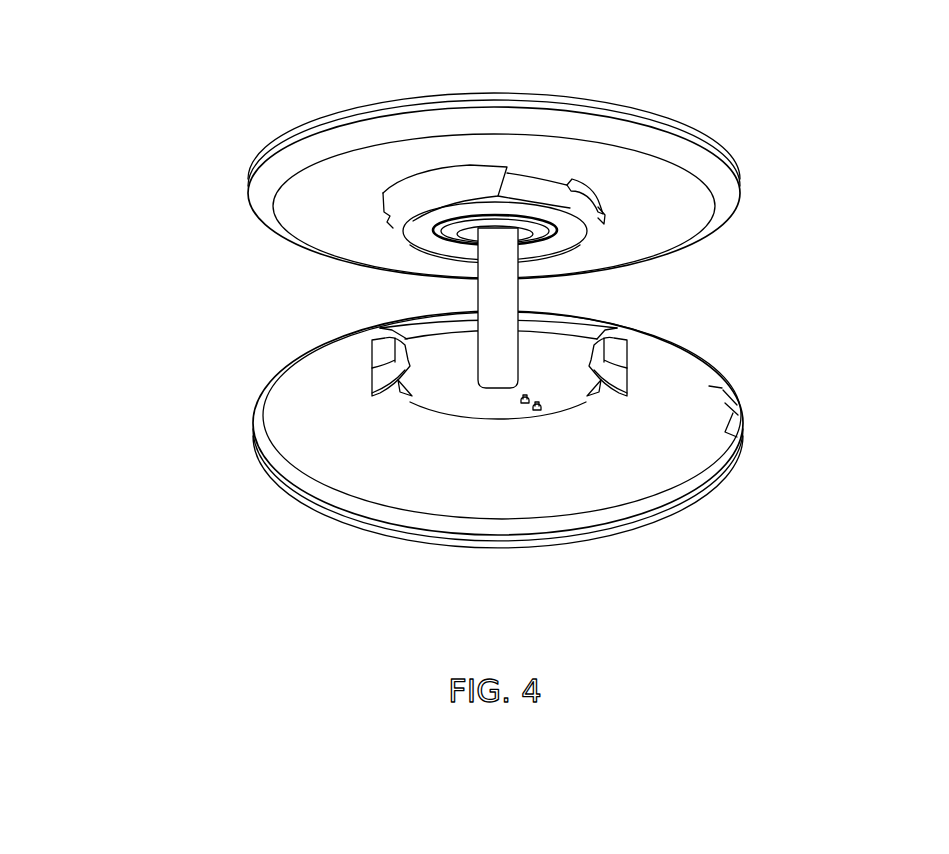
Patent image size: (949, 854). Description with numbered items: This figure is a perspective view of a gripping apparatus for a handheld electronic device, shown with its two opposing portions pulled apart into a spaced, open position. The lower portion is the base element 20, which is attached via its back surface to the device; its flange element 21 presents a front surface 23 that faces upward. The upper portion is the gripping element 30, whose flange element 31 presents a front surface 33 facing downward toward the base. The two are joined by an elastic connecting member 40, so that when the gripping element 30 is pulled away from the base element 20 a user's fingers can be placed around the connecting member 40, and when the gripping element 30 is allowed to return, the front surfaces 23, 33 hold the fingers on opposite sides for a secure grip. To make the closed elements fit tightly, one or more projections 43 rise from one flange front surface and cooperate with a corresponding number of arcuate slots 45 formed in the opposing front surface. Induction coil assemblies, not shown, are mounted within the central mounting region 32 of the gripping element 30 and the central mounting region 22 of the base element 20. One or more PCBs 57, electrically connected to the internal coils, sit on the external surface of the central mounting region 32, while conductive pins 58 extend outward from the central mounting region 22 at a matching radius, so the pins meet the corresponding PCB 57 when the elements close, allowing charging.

The base element 20 is at (542, 472).
The flange element 21 is at (683, 511).
The central mounting region 22 is at (435, 363).
The front surface 23 is at (332, 465).
The gripping element 30 is at (535, 159).
The flange element 31 is at (676, 123).
The central mounting region 32 is at (410, 198).
The front surface 33 is at (617, 158).
The connecting member 40 is at (495, 293).
The projections 43 is at (617, 370).
The arcuate slots 45 is at (560, 196).
The PCB 57 is at (430, 231).
The conductive pins 58 is at (537, 417).